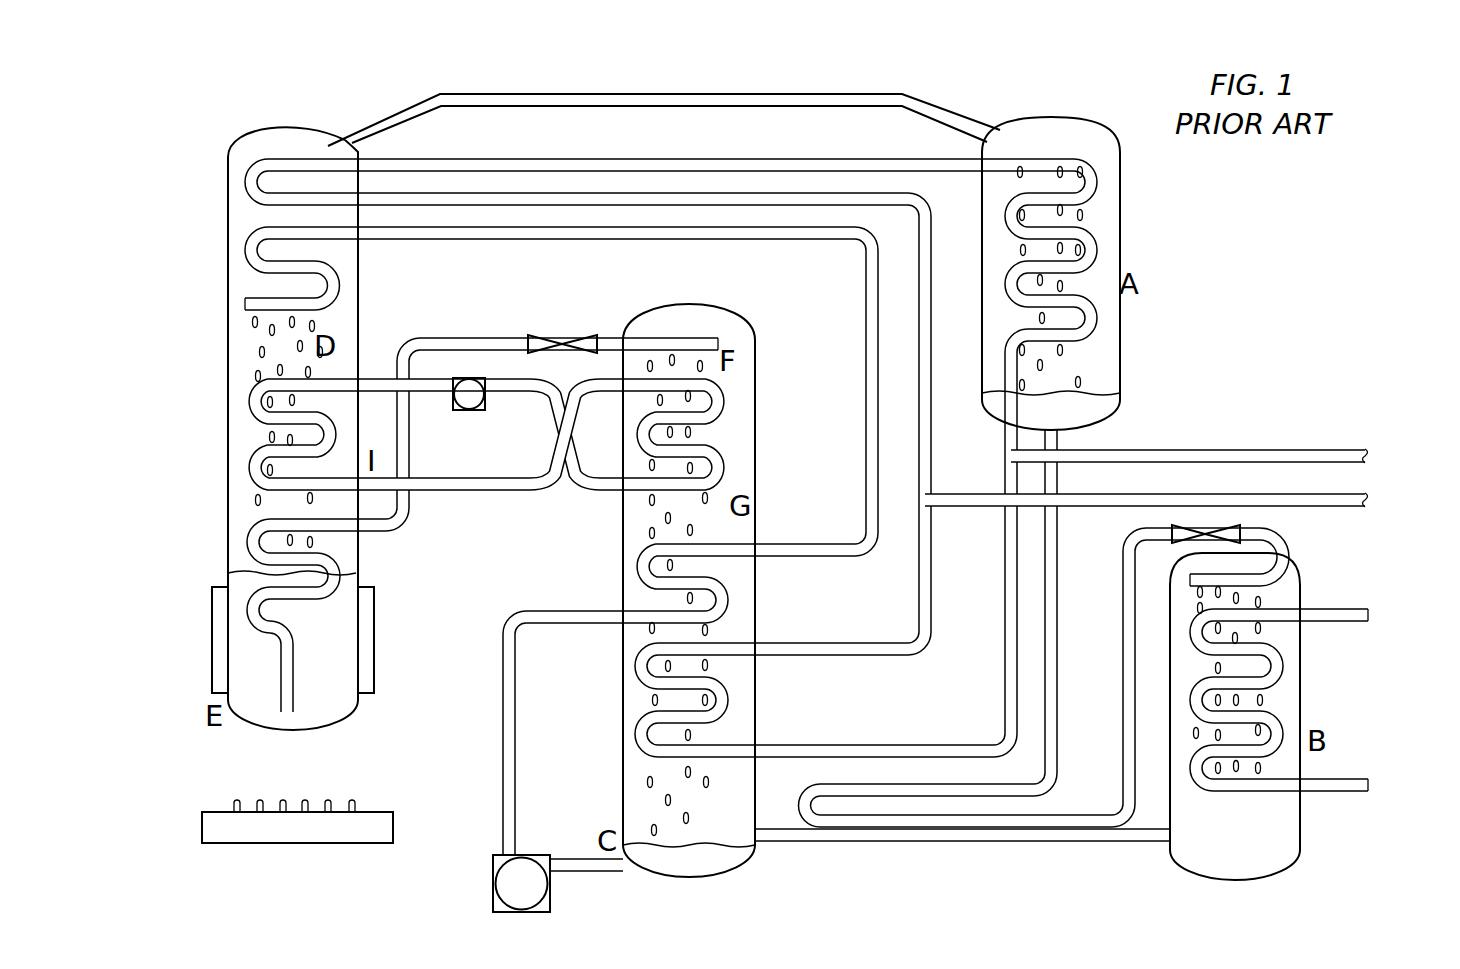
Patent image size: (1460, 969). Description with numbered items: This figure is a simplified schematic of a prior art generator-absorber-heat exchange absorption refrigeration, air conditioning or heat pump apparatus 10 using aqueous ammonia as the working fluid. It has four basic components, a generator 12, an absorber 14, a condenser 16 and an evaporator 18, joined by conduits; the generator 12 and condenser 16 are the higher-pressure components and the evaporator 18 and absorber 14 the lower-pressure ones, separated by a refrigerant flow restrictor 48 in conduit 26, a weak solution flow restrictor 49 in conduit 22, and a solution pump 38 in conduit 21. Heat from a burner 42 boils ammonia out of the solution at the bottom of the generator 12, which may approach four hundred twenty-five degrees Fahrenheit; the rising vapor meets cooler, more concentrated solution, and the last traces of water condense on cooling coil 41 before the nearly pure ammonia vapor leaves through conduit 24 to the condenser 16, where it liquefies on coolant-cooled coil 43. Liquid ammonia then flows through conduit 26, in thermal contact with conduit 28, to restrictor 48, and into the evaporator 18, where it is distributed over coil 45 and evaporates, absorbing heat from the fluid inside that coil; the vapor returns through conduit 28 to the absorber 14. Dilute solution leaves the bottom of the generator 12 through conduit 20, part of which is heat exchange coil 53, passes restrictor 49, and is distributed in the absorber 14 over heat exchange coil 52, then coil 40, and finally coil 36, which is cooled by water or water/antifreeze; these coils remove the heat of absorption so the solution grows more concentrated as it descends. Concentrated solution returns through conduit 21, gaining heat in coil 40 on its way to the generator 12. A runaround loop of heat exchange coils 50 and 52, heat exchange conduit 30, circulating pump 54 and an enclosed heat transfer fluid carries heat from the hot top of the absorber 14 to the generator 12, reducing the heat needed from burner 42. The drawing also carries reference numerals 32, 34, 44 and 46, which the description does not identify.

The absorption apparatus 10 is at (794, 70).
The generator 12 is at (365, 310).
The absorber 14 is at (762, 485).
The condenser 16 is at (1110, 110).
The evaporator 18 is at (1310, 848).
The conduit 20 is at (860, 315).
The conduit 21 is at (530, 238).
The conduit 22 is at (412, 452).
The conduit 24 is at (565, 110).
The conduit 26 is at (1057, 590).
The conduit 28 is at (1010, 845).
The heat exchange conduit 30 is at (540, 492).
The sump 32 is at (708, 875).
The cooling water lines 34 is at (1385, 455).
The heat exchange coil 36 is at (625, 675).
The solution pump 38 is at (535, 855).
The heat exchange coil 40 is at (635, 566).
The cooling coil 41 is at (250, 240).
The burner 42 is at (393, 820).
The coil 43 is at (1092, 235).
The mounting brackets 44 is at (378, 632).
The coil 45 is at (1283, 666).
The absorber sump 46 is at (345, 710).
The refrigerant flow restrictor 48 is at (1232, 530).
The weak solution flow restrictor 49 is at (583, 340).
The heat exchange coil 50 is at (248, 456).
The heat exchange coil 52 is at (730, 395).
The heat exchange coil 53 is at (248, 540).
The circulating pump 54 is at (475, 378).